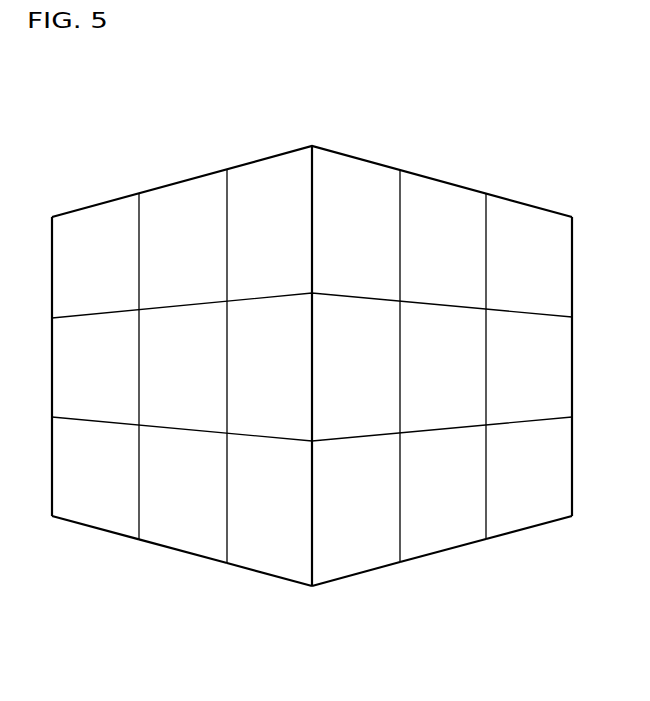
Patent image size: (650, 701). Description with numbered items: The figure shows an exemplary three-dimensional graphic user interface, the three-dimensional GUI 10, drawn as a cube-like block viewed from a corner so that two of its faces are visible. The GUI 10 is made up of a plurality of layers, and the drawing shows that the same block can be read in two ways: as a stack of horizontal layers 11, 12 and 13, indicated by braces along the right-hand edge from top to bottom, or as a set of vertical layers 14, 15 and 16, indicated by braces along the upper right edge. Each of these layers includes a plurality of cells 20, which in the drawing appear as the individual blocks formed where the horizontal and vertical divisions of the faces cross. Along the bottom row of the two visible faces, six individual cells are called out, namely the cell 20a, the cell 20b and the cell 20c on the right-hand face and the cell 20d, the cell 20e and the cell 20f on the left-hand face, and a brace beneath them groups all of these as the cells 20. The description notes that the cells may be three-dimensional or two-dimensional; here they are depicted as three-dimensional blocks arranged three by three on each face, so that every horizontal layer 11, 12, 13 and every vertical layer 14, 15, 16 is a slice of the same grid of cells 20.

The 3D GUI 10 is at (195, 139).
The horizontal layer 11 is at (578, 218).
The horizontal layer 12 is at (578, 318).
The horizontal layer 13 is at (578, 418).
The vertical layer 14 is at (529, 352).
The vertical layer 15 is at (442, 352).
The vertical layer 16 is at (355, 351).
The cells 20 is at (312, 433).
The cell 20a is at (529, 584).
The cell 20b is at (448, 535).
The cell 20c is at (365, 563).
The cell 20d is at (260, 563).
The cell 20e is at (177, 535).
The cell 20f is at (85, 513).